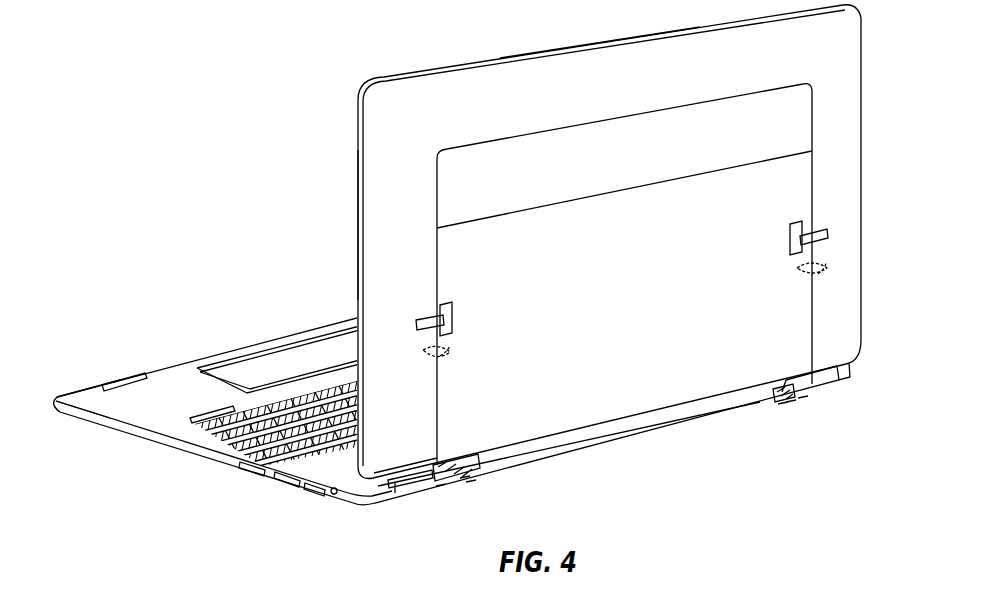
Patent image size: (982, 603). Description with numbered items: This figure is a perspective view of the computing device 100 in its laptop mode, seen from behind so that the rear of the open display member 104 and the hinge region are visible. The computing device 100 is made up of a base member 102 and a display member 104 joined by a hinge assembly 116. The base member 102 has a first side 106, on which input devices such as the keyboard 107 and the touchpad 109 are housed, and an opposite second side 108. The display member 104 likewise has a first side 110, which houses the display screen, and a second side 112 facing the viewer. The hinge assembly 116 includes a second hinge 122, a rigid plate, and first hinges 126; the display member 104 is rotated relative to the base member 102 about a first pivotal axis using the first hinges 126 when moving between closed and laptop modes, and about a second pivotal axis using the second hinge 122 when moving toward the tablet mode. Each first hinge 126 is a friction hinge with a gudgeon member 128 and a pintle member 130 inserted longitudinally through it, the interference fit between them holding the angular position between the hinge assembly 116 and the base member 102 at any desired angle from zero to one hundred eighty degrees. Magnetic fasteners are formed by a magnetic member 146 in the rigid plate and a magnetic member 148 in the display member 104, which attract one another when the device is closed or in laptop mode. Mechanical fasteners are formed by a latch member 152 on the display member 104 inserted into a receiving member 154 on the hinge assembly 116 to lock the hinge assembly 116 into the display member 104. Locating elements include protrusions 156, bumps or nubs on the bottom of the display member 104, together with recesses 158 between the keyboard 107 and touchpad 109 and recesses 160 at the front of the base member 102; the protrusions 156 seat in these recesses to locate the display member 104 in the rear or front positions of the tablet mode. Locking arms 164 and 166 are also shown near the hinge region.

The computing device 100 is at (167, 132).
The base member 102 is at (133, 432).
The display member 104 is at (372, 82).
The first side 106 is at (72, 396).
The keyboard 107 is at (263, 405).
The second side 108 is at (86, 416).
The touchpad 109 is at (321, 367).
The first side 110 is at (357, 218).
The second side 112 is at (563, 57).
The hinge assembly 116 is at (650, 307).
The second hinge 122 is at (598, 217).
The first hinges 126 is at (442, 490).
The gudgeon member 128 is at (463, 481).
The pintle member 130 is at (463, 482).
The magnetic member 146 is at (452, 354).
The magnetic member 148 is at (423, 355).
The latch member 152 is at (425, 318).
The receiving member 154 is at (450, 305).
The protrusions 156 is at (414, 464).
The recesses 158 is at (205, 413).
The recesses 160 is at (130, 378).
The locking arm 164 is at (463, 463).
The locking arm 166 is at (783, 392).